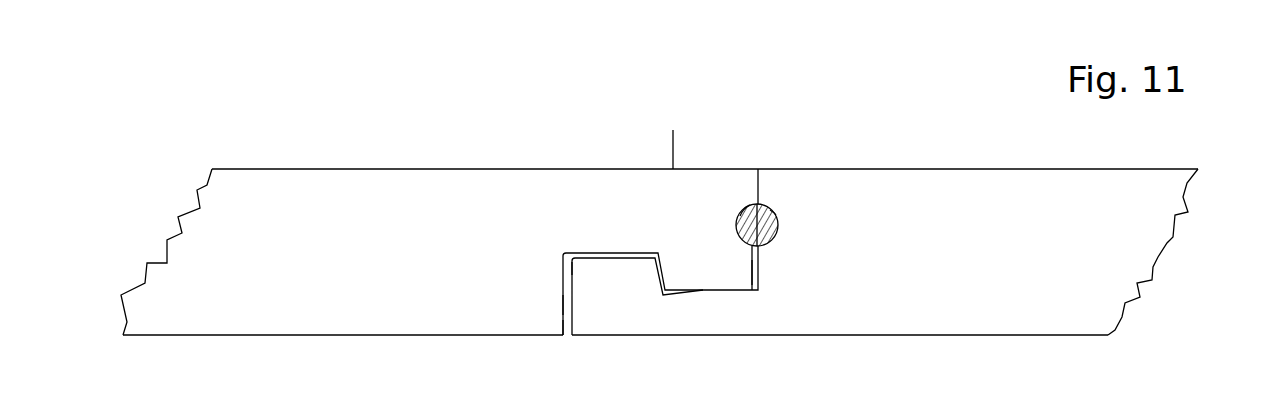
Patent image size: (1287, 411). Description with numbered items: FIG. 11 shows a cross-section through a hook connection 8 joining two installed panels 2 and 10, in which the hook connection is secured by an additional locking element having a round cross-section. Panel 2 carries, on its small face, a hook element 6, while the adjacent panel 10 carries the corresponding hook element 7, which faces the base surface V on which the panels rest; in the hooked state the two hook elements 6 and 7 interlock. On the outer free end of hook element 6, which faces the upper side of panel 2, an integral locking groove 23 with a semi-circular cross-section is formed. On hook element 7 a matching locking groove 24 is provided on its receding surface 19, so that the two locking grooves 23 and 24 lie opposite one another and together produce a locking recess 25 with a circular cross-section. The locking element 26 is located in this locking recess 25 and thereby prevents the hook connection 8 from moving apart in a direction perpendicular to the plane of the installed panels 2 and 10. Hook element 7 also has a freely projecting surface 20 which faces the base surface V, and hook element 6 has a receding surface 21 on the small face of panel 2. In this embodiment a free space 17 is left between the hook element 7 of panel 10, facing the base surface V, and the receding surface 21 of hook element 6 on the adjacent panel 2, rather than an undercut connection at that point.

The panel 2 is at (320, 240).
The panel 10 is at (1068, 245).
The hook element 6 is at (612, 216).
The hook element 7 is at (662, 328).
The locking groove 23 is at (770, 238).
The locking groove 24 is at (743, 214).
The locking recess 25 is at (782, 180).
The locking element 26 is at (757, 203).
The receding surface 19 is at (751, 271).
The freely projecting surface 20 is at (565, 306).
The receding surface 21 is at (574, 268).
The free space 17 is at (566, 360).
The hook connection 8 is at (670, 100).
The base surface V is at (1183, 334).